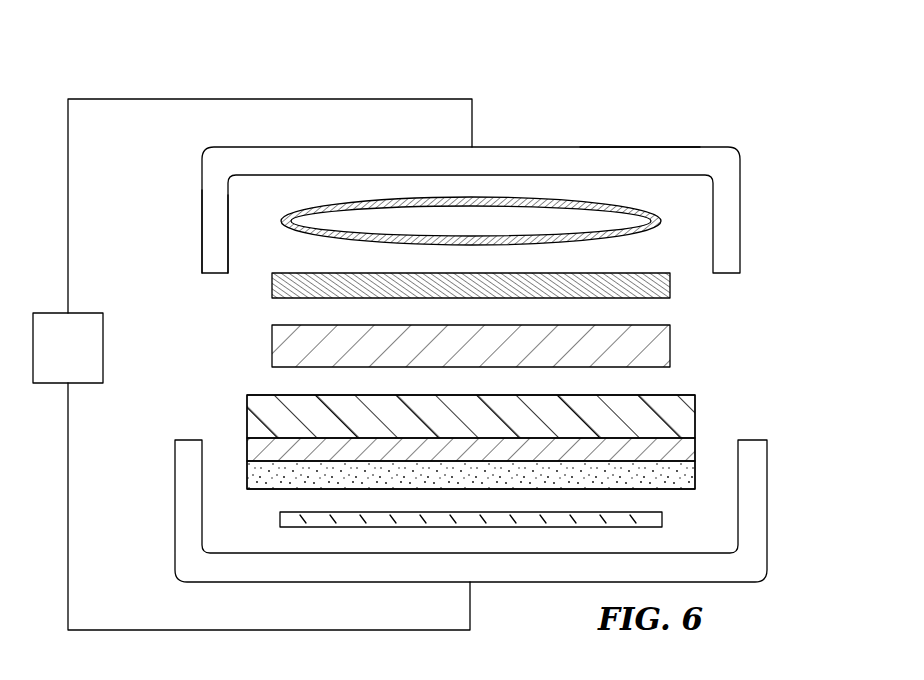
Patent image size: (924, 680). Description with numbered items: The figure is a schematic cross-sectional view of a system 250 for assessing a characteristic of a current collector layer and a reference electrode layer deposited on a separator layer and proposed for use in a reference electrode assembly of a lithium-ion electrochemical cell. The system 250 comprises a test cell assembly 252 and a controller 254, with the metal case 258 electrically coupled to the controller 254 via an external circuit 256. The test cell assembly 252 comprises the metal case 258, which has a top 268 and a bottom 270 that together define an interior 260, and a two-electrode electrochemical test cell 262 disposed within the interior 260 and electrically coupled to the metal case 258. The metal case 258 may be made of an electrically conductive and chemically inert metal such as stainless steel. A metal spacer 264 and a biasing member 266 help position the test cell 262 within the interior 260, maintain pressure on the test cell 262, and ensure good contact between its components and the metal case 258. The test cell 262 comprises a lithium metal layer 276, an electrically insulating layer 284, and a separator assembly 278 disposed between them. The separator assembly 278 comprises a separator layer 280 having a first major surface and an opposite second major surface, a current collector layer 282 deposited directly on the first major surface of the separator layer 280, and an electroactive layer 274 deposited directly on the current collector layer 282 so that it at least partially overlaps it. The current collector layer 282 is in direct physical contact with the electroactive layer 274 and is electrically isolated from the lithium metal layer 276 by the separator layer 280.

The system 250 is at (731, 122).
The test cell assembly 252 is at (537, 146).
The controller 254 is at (68, 348).
The external circuit 256 is at (98, 99).
The metal case 258 is at (202, 184).
The interior 260 is at (266, 192).
The two-electrode electrochemical test cell 262 is at (240, 380).
The metal spacer 264 is at (672, 288).
The biasing member 266 is at (665, 220).
The top 268 is at (635, 146).
The bottom 270 is at (767, 540).
The electroactive layer 274 is at (697, 478).
The lithium metal layer 276 is at (672, 356).
The separator assembly 278 is at (707, 427).
The separator layer 280 is at (247, 424).
The current collector layer 282 is at (247, 449).
The electrically insulating layer 284 is at (505, 528).